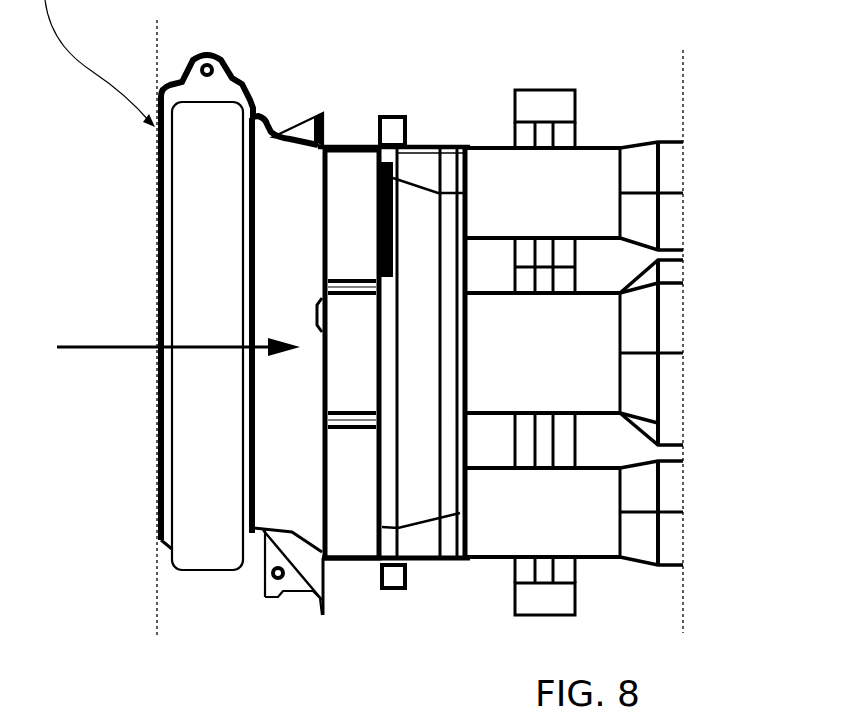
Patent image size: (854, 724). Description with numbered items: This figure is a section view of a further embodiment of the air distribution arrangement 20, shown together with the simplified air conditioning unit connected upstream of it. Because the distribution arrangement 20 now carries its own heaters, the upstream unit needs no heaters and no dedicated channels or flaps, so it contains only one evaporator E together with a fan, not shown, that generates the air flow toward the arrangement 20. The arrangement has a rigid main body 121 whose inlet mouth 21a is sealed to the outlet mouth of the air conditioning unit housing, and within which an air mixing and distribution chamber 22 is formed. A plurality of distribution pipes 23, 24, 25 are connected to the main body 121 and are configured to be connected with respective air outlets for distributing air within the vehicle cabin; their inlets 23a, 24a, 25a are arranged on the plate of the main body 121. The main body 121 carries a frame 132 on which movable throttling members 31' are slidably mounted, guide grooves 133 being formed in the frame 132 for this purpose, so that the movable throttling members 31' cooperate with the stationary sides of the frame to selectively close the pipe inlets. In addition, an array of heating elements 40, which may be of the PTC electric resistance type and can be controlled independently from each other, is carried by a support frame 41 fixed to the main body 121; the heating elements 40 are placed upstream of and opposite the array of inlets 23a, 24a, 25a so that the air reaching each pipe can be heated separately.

The evaporator E is at (203, 192).
The air distribution arrangement 20 is at (696, 569).
The inlet mouth 21a is at (318, 222).
The air mixing and distribution chamber 22 is at (470, 340).
The distribution pipe 23 is at (547, 188).
The inlet 23a is at (436, 143).
The distribution pipe 24 is at (578, 373).
The inlet 24a is at (457, 372).
The distribution pipe 25 is at (543, 520).
The inlet 25a is at (457, 527).
The movable throttling member 31' is at (640, 272).
The heating element 40 is at (360, 350).
The support frame 41 is at (353, 560).
The main body 121 is at (458, 135).
The frame 132 is at (560, 98).
The guide groove 133 is at (660, 477).